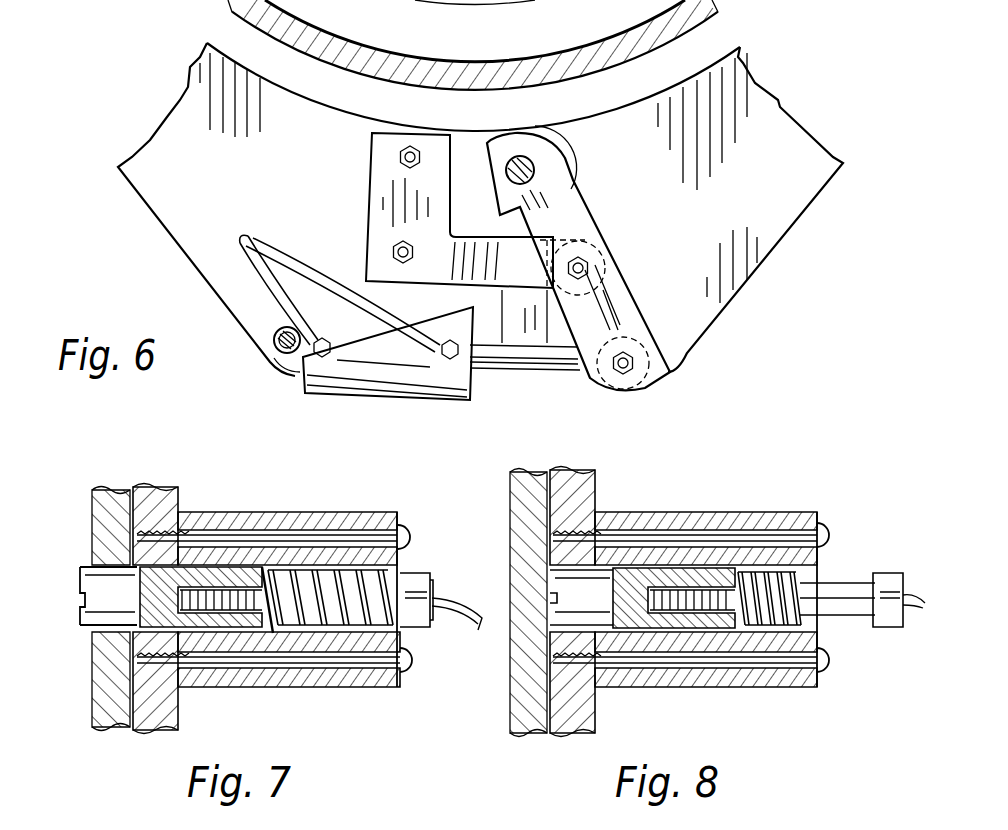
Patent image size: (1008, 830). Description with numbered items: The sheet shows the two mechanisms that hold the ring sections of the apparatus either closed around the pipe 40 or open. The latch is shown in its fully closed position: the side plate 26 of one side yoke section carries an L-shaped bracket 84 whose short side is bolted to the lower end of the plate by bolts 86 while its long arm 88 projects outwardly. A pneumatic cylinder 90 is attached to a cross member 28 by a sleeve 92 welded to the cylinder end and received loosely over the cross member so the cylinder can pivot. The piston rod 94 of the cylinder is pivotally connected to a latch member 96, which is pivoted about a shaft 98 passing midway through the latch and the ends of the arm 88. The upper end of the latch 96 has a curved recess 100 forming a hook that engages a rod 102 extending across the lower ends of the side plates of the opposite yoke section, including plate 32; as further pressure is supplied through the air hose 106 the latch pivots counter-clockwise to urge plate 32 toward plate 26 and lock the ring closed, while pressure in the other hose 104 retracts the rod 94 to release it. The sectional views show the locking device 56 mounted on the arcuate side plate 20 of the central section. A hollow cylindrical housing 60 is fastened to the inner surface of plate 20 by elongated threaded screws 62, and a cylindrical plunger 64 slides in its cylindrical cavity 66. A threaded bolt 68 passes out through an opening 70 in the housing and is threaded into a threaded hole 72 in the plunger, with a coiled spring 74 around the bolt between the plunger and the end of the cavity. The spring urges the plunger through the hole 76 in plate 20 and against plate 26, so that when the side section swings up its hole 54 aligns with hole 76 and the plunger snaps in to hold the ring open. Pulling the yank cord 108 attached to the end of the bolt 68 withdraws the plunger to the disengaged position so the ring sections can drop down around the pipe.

In FIG. 7, the arcuate side plate 20 is at (173, 503).
In FIG. 8, the arcuate side plate 20 is at (597, 465).
In FIG. 6, the arcuate side plate 26 is at (150, 200).
In FIG. 7, the arcuate side plate 26 is at (92, 708).
In FIG. 8, the arcuate side plate 26 is at (513, 493).
In FIG. 6, the cross member 28 is at (287, 324).
In FIG. 6, the arcuate side plate 32 is at (803, 200).
In FIG. 6, the pipe 40 is at (517, 68).
In FIG. 7, the hole 54 is at (90, 567).
In FIG. 7, the locking device 56 is at (326, 500).
In FIG. 8, the locking device 56 is at (754, 499).
In FIG. 7, the hollow cylindrical housing 60 is at (268, 688).
In FIG. 7, the elongated threaded screws 62 is at (413, 540).
In FIG. 8, the elongated threaded screws 62 is at (820, 513).
In FIG. 7, the cylindrical plunger 64 is at (88, 625).
In FIG. 8, the cylindrical plunger 64 is at (510, 528).
In FIG. 7, the cylindrical cavity 66 is at (257, 512).
In FIG. 8, the cylindrical cavity 66 is at (689, 520).
In FIG. 7, the threaded bolt 68 is at (407, 571).
In FIG. 8, the threaded bolt 68 is at (847, 617).
In FIG. 8, the opening 70 is at (827, 577).
In FIG. 8, the threaded hole 72 is at (677, 615).
In FIG. 8, the coiled spring 74 is at (753, 622).
In FIG. 7, the hole 76 is at (203, 688).
In FIG. 8, the hole 76 is at (582, 665).
In FIG. 6, the L-shaped bracket 84 is at (372, 212).
In FIG. 6, the bolts 86 is at (413, 252).
In FIG. 6, the long arm 88 is at (547, 368).
In FIG. 6, the pneumatic cylinder 90 is at (372, 390).
In FIG. 6, the sleeve 92 is at (287, 363).
In FIG. 6, the piston rod 94 is at (573, 377).
In FIG. 6, the pivotal latch member 96 is at (627, 320).
In FIG. 6, the shaft 98 is at (578, 257).
In FIG. 6, the curved recess 100 is at (580, 195).
In FIG. 6, the rod 102 is at (548, 152).
In FIG. 6, the air hose 104 is at (310, 290).
In FIG. 6, the air hose 106 is at (250, 270).
In FIG. 7, the yank cord 108 is at (450, 612).
In FIG. 8, the yank cord 108 is at (923, 597).